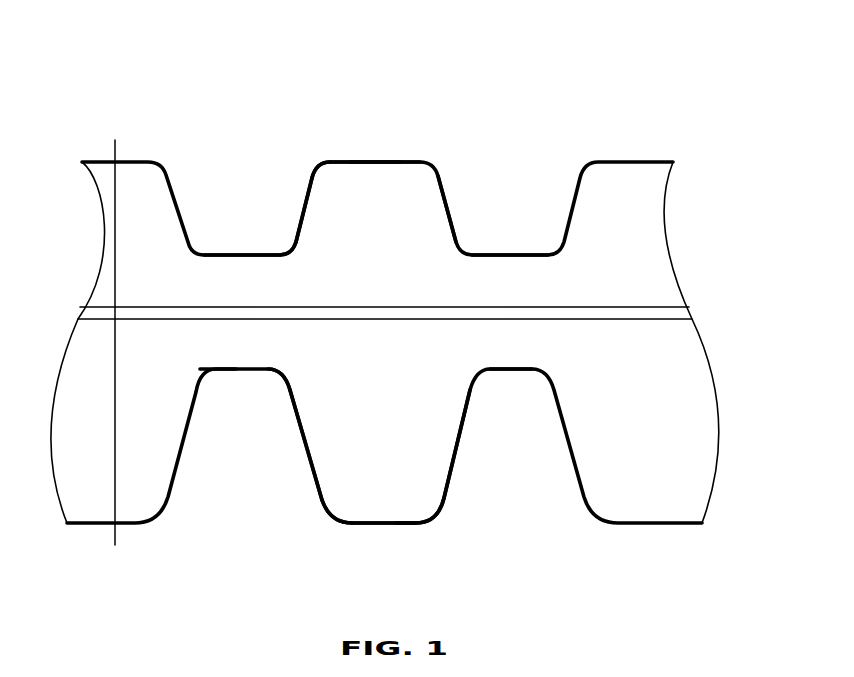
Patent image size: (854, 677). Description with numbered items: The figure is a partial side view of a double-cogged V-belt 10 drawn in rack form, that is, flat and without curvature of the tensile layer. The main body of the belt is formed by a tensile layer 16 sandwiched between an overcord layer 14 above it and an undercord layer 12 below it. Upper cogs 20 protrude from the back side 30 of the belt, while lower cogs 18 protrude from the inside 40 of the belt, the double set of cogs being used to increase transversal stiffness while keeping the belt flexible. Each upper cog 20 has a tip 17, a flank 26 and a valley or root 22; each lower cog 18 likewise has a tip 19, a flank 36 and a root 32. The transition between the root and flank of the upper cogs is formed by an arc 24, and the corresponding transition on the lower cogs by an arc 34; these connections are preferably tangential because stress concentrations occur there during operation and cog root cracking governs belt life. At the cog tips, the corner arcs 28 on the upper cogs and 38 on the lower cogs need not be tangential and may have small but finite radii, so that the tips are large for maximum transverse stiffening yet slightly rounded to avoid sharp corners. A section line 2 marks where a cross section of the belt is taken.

The section line 2 is at (115, 140).
The double-cogged V-belt 10 is at (583, 93).
The undercord layer 12 is at (513, 348).
The overcord layer 14 is at (519, 278).
The tensile layer 16 is at (675, 314).
The tip 17 is at (395, 160).
The lower cogs 18 is at (400, 448).
The tip 19 is at (394, 525).
The upper cogs 20 is at (407, 202).
The root 22 is at (242, 256).
The arc A1 24 is at (286, 250).
The flank 26 is at (307, 208).
The arc A2 28 is at (310, 160).
The back side 30 is at (376, 161).
The root 32 is at (238, 370).
The arc A3 34 is at (278, 370).
The flank 36 is at (300, 447).
The arc A4 38 is at (332, 518).
The inside 40 is at (378, 525).